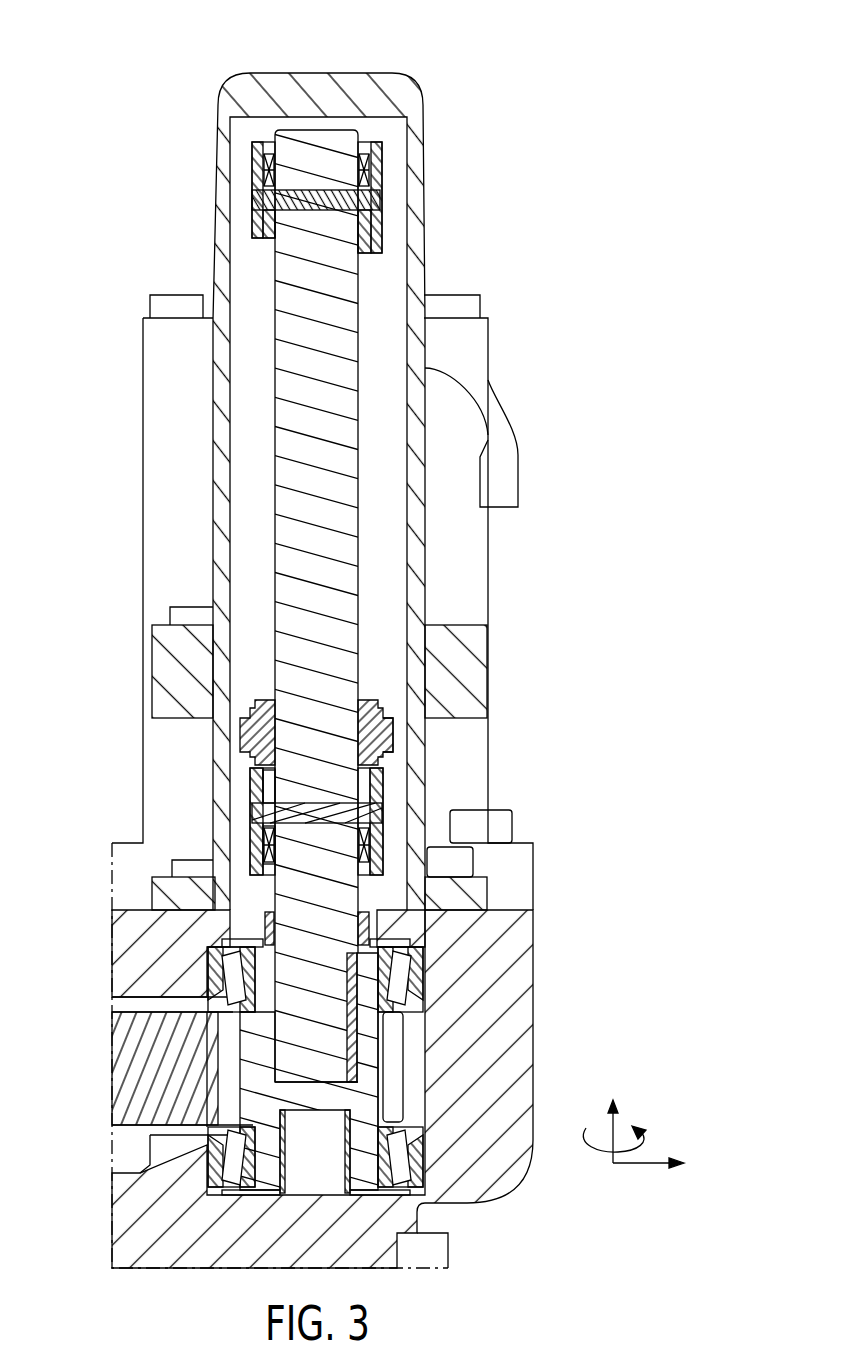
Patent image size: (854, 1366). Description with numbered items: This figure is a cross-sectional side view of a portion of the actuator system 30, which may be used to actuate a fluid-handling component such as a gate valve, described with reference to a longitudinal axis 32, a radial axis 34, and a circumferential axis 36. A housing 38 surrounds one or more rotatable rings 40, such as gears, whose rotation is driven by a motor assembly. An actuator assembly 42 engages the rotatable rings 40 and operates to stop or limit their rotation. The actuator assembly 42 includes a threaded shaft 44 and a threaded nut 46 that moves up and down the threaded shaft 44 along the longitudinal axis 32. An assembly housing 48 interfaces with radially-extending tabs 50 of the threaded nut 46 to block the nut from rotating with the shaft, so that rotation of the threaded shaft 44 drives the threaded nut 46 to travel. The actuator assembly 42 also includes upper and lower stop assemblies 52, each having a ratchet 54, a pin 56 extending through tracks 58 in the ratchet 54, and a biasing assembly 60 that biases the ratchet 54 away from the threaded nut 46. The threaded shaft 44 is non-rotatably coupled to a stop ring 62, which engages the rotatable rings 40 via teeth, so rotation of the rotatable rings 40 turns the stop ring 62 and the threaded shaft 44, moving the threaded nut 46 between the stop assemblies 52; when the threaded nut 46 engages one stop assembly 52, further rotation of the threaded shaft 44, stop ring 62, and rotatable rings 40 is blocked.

The actuator system 30 is at (440, 43).
The longitudinal axis 32 is at (622, 1126).
The radial axis 34 is at (640, 1165).
The circumferential axis 36 is at (590, 1150).
The housing 38 is at (155, 1220).
The rotatable rings 40 is at (140, 1040).
The actuator assembly 42 is at (433, 164).
The threaded shaft 44 is at (335, 427).
The threaded nut 46 is at (372, 744).
The assembly housing 48 is at (372, 95).
The radially-extending tabs 50 is at (393, 720).
The stop assemblies 52 is at (233, 159).
The ratchet 54 is at (373, 782).
The pin 56 is at (373, 813).
The tracks 58 is at (270, 800).
The biasing assembly 60 is at (270, 852).
The stop ring 62 is at (250, 1062).